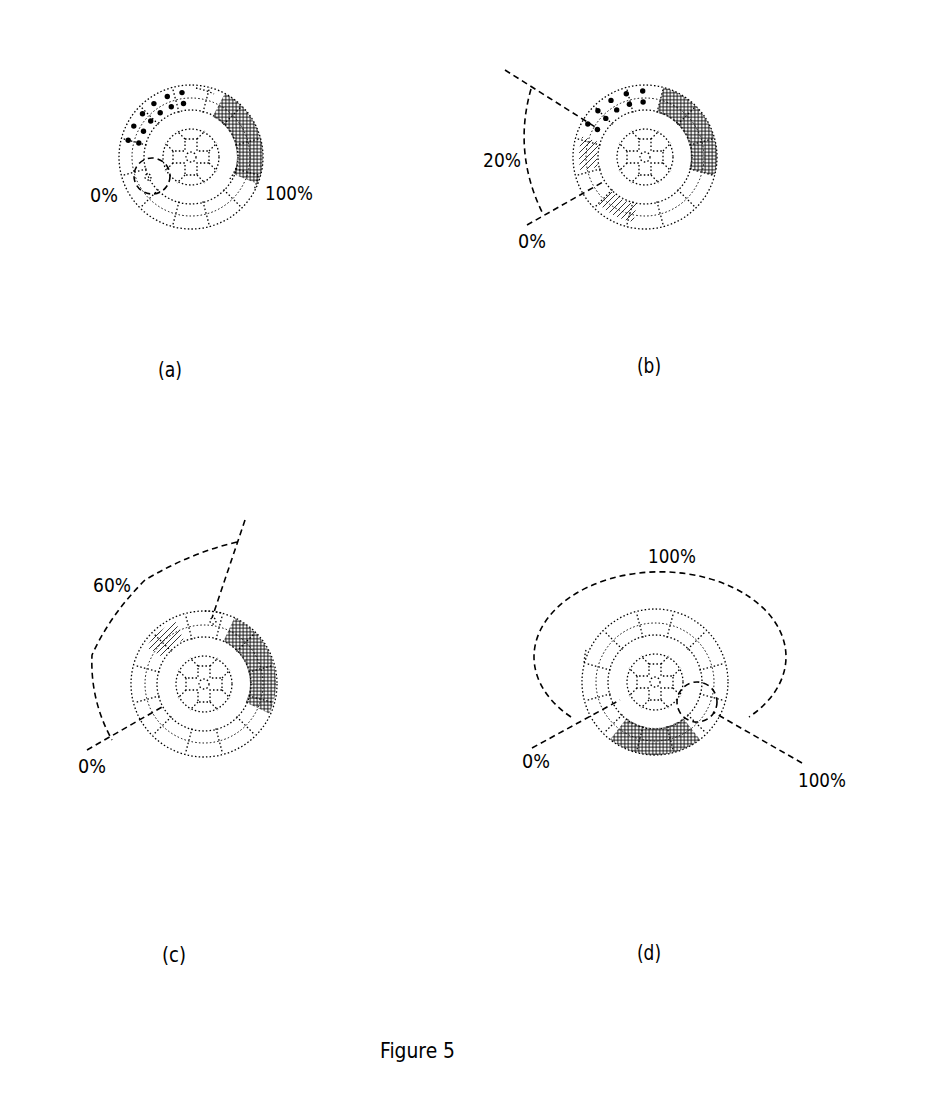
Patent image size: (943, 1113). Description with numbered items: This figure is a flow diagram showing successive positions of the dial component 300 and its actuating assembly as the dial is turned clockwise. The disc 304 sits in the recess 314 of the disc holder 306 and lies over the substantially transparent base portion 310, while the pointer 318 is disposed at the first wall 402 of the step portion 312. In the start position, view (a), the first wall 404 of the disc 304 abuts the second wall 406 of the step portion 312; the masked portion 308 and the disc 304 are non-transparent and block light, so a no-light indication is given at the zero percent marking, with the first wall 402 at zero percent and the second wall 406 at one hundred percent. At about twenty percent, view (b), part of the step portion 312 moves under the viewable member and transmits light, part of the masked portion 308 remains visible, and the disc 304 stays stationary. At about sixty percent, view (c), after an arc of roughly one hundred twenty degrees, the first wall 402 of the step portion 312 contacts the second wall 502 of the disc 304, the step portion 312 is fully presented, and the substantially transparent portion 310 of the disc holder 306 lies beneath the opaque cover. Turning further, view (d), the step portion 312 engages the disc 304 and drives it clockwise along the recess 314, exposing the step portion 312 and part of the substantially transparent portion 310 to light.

The dial component 300 is at (193, 130).
The disc 304 is at (243, 128).
The disc holder 306 is at (122, 156).
The masked portion 308 is at (152, 117).
The substantially transparent portion 310 is at (222, 738).
The step portion 312 is at (208, 213).
The recess 314 is at (597, 650).
The pointer 318 is at (148, 177).
The first wall of the step portion 402 is at (133, 192).
The first wall of the disc 404 is at (240, 183).
The second wall of the step portion 406 is at (240, 180).
The second wall of the disc 502 is at (203, 100).